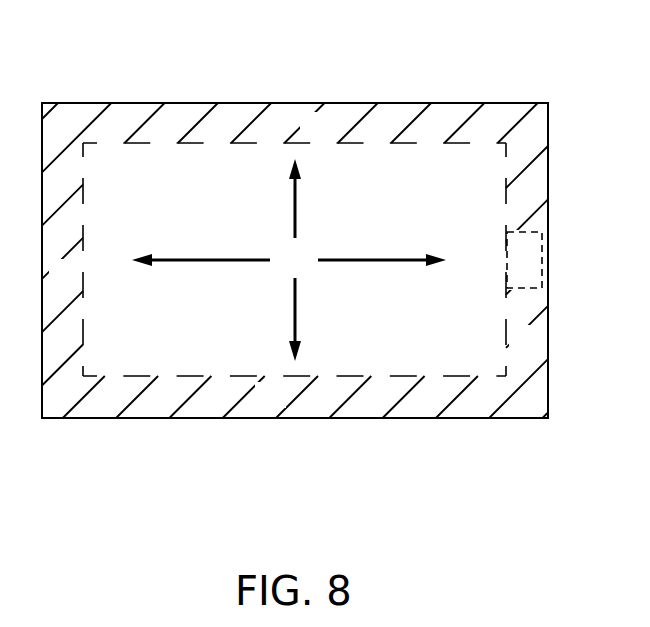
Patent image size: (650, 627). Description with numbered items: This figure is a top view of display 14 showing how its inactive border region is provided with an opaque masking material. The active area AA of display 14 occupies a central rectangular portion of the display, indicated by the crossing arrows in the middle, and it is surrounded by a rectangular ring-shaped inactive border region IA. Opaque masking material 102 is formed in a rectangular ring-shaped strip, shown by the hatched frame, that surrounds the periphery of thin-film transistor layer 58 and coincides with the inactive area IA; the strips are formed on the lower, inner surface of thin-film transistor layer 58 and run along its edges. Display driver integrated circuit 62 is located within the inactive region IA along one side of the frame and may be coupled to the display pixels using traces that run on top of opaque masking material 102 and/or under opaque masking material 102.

The display 14 is at (328, 256).
The thin-film transistor layer 58 is at (228, 102).
The opaque masking material 102 is at (157, 410).
The display driver integrated circuit 62 is at (537, 268).